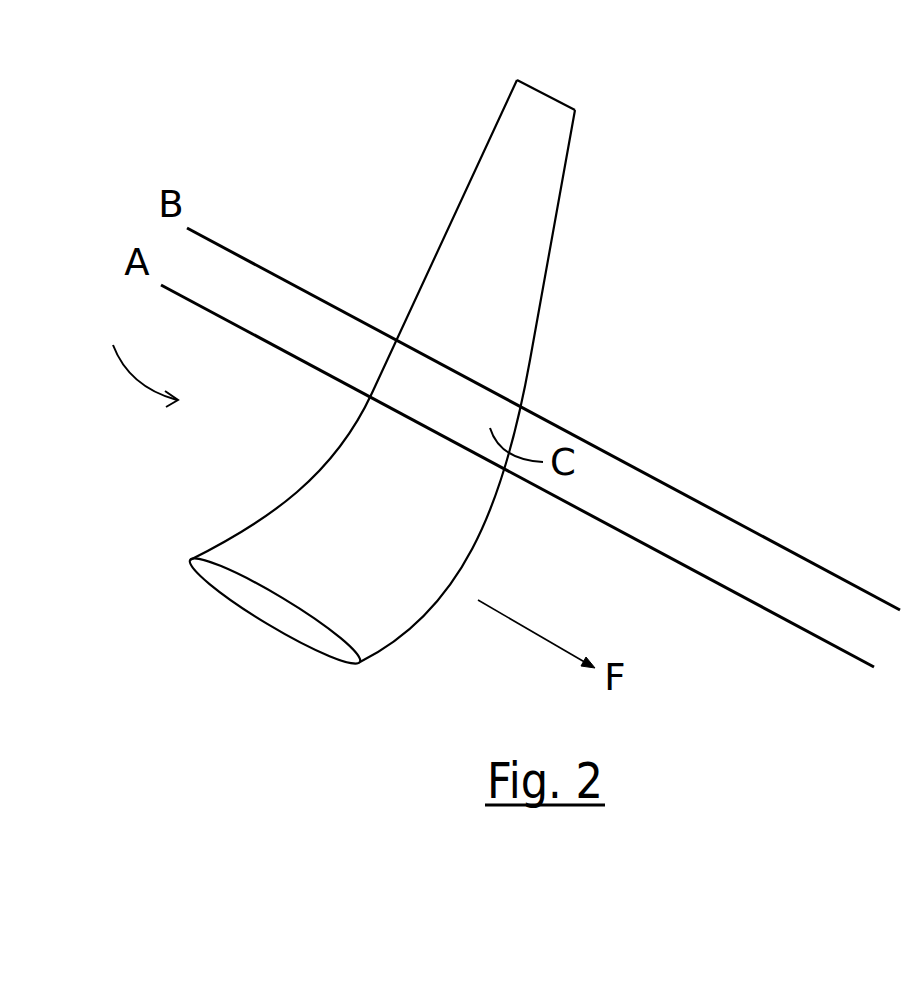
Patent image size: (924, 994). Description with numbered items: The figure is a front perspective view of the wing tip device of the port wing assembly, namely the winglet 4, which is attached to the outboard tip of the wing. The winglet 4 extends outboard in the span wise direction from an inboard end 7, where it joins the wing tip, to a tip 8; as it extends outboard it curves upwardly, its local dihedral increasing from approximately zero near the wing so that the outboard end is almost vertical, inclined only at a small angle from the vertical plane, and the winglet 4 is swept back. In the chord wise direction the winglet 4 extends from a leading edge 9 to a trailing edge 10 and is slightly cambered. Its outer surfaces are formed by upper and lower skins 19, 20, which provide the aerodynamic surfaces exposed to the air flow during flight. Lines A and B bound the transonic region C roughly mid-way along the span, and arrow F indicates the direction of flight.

The winglet 4 is at (124, 352).
The inboard end 7 is at (225, 578).
The tip 8 is at (553, 85).
The leading edge 9 is at (543, 310).
The trailing edge 10 is at (443, 243).
The upper skin 19 is at (512, 165).
The lower skin 20 is at (562, 197).